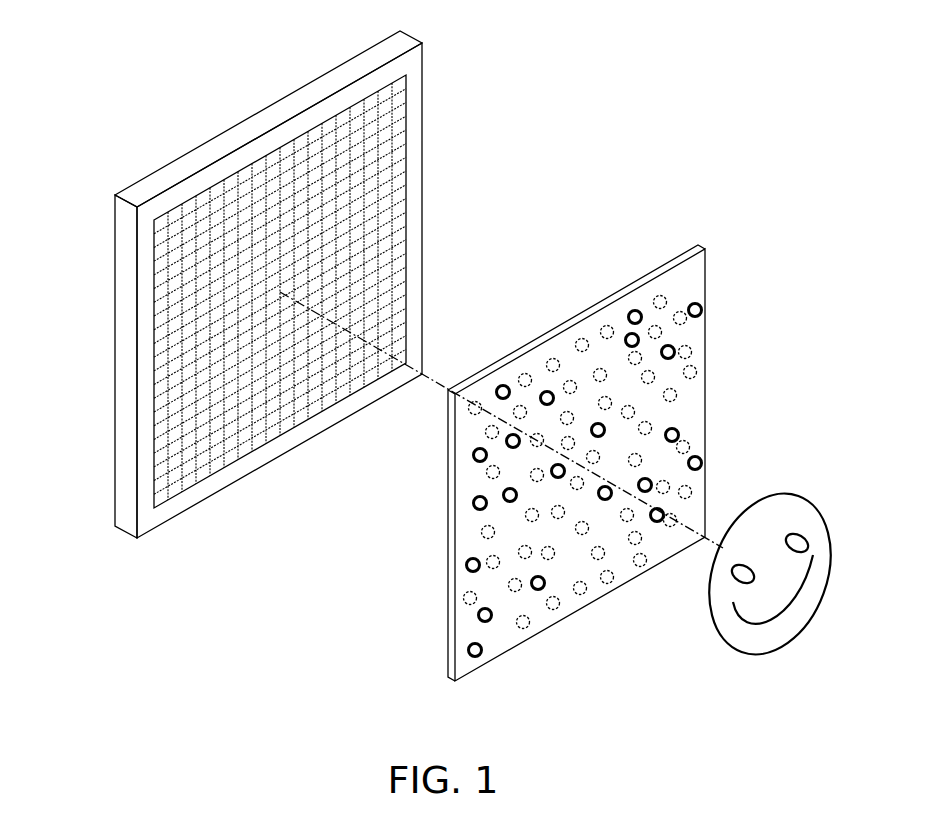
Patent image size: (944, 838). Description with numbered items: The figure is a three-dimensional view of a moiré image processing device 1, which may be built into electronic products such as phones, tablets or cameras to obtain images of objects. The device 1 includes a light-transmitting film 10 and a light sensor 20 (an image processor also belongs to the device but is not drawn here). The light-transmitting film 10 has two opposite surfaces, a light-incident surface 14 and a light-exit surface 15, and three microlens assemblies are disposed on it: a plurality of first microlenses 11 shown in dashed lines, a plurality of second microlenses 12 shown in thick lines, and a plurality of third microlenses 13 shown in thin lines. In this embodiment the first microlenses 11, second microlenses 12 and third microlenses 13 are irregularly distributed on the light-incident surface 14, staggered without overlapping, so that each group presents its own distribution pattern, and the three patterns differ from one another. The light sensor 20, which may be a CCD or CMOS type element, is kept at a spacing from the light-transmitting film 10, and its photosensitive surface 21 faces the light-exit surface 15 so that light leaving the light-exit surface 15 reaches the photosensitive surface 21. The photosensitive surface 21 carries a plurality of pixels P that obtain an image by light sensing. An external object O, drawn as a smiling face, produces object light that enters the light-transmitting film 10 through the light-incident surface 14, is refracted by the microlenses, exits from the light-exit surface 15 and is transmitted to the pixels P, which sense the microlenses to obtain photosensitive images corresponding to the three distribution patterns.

The moiré image processing device 1 is at (165, 78).
The light-transmitting film 10 is at (701, 238).
The first microlenses 11 is at (522, 374).
The second microlenses 12 is at (473, 456).
The third microlenses 13 is at (469, 400).
The light-incident surface 14 is at (510, 640).
The light-exit surface 15 is at (446, 628).
The light sensor 20 is at (115, 318).
The photosensitive surface 21 is at (197, 500).
The pixels P is at (247, 167).
The external object O is at (832, 520).